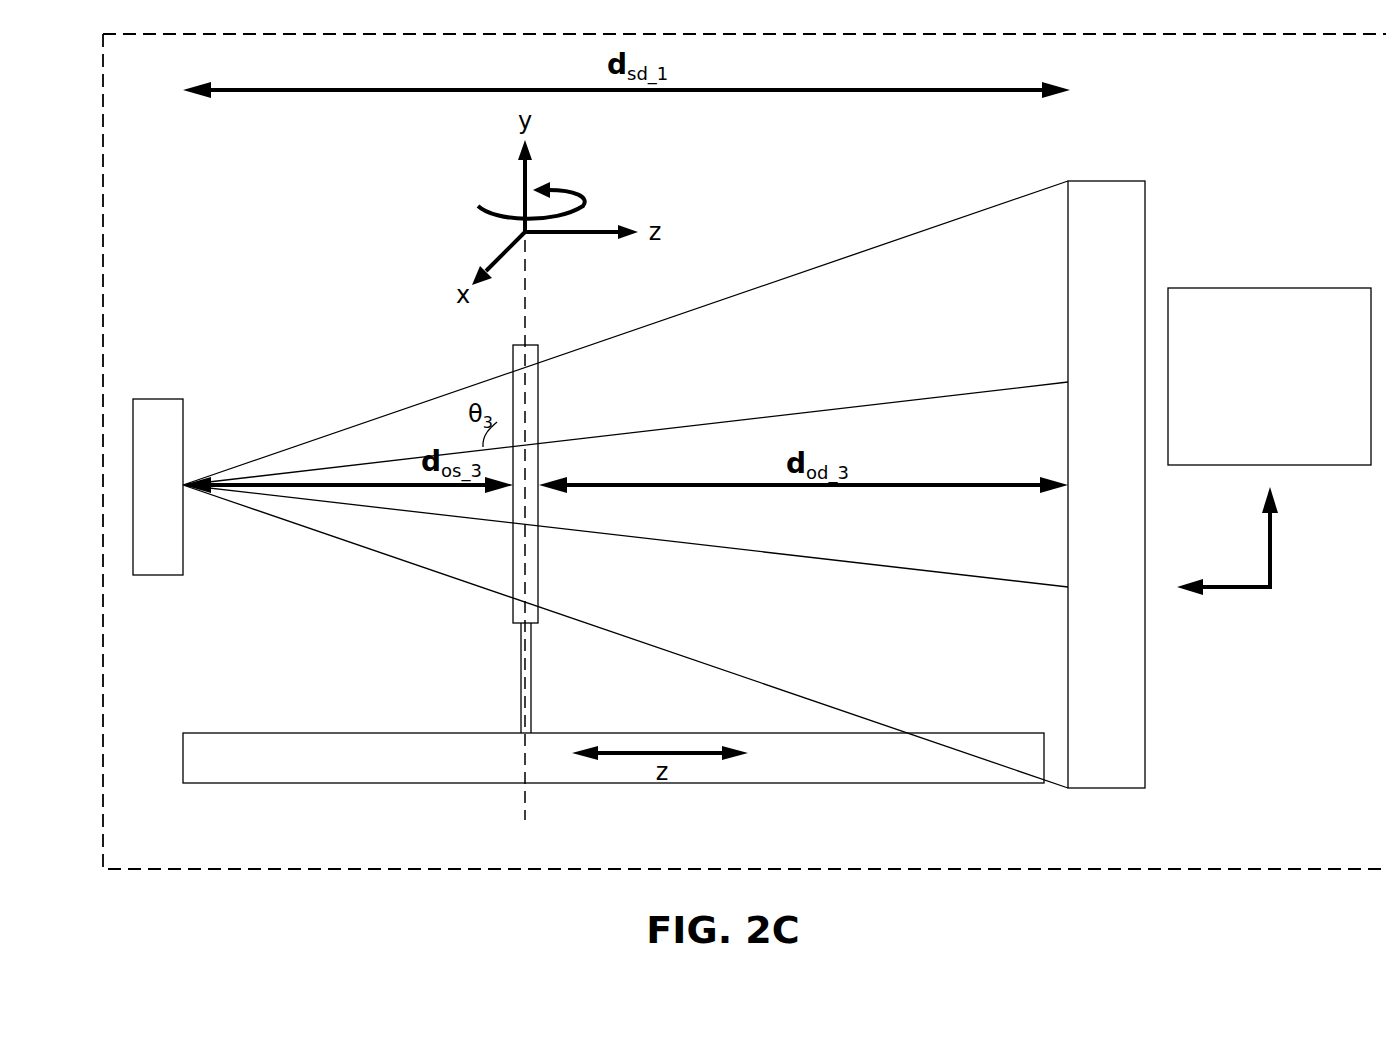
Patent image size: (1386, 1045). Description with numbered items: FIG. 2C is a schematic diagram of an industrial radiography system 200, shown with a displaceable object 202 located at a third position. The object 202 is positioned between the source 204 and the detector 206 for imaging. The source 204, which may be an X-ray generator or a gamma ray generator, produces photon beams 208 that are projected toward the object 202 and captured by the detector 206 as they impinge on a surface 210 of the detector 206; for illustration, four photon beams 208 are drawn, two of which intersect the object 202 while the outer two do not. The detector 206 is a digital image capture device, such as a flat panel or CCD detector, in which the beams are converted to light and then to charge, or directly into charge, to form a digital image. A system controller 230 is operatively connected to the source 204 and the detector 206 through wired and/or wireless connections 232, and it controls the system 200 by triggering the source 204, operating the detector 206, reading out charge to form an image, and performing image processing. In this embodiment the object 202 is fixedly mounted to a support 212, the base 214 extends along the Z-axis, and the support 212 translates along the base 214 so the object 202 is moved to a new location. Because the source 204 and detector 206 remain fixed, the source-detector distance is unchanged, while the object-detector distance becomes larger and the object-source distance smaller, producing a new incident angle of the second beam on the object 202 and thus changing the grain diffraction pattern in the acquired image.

The industrial radiography system 200 is at (103, 250).
The object 202 is at (540, 585).
The source 204 is at (160, 576).
The detector 206 is at (1145, 728).
The photon beams 208 is at (822, 265).
The surface 210 is at (1068, 287).
The support 212 is at (520, 698).
The base 214 is at (282, 733).
The system controller 230 is at (1269, 376).
The connections 232 is at (1238, 589).